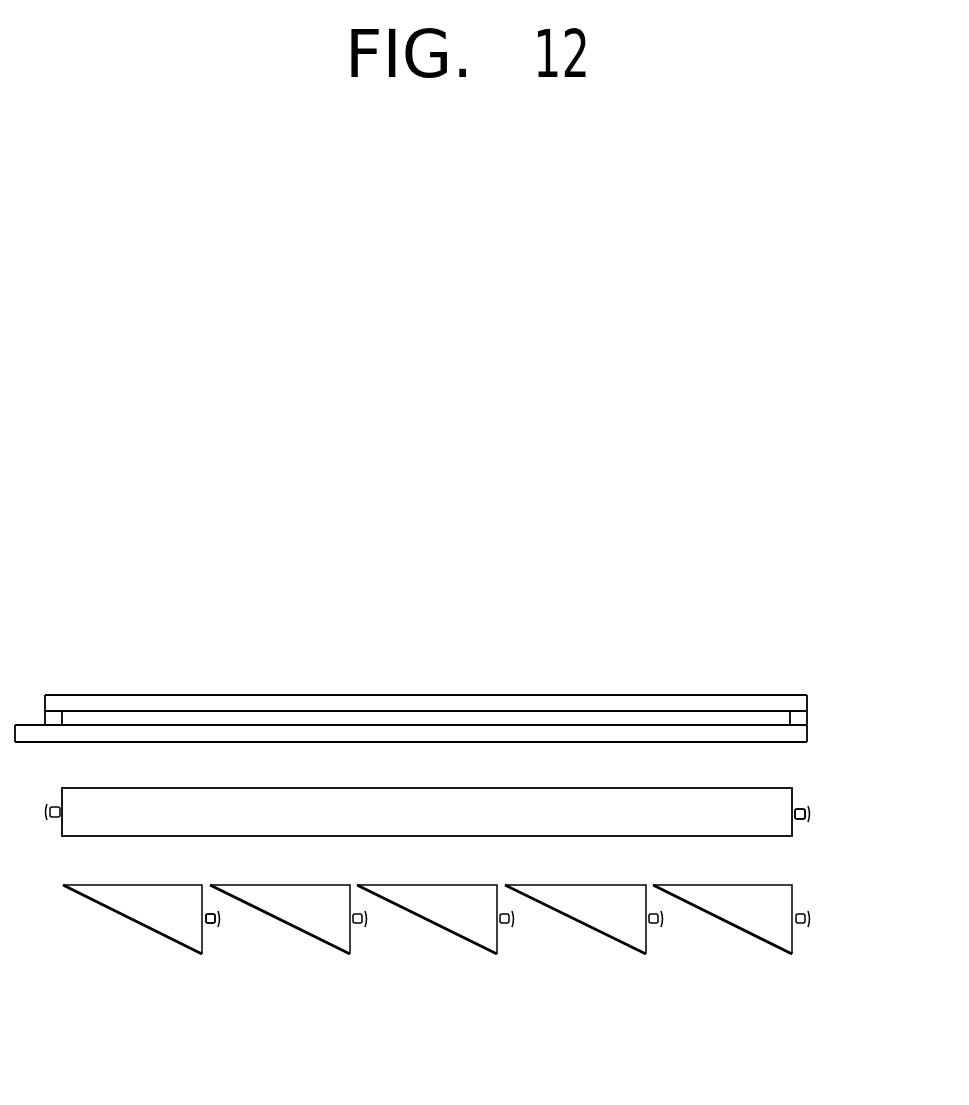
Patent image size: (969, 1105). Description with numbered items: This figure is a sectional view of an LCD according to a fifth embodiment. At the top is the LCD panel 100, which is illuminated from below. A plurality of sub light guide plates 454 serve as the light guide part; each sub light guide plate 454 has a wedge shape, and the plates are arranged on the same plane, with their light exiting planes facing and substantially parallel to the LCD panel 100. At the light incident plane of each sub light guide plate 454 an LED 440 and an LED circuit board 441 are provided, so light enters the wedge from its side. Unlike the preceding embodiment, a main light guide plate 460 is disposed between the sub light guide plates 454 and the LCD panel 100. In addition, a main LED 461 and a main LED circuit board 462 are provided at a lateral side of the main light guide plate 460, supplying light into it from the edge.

The LCD panel 100 is at (816, 593).
The main light guide plate 460 is at (770, 808).
The main LED 461 is at (803, 819).
The main LED circuit board 462 is at (803, 810).
The sub light guide plate 454 is at (147, 922).
The LED 440 is at (214, 925).
The LED circuit board 441 is at (218, 918).